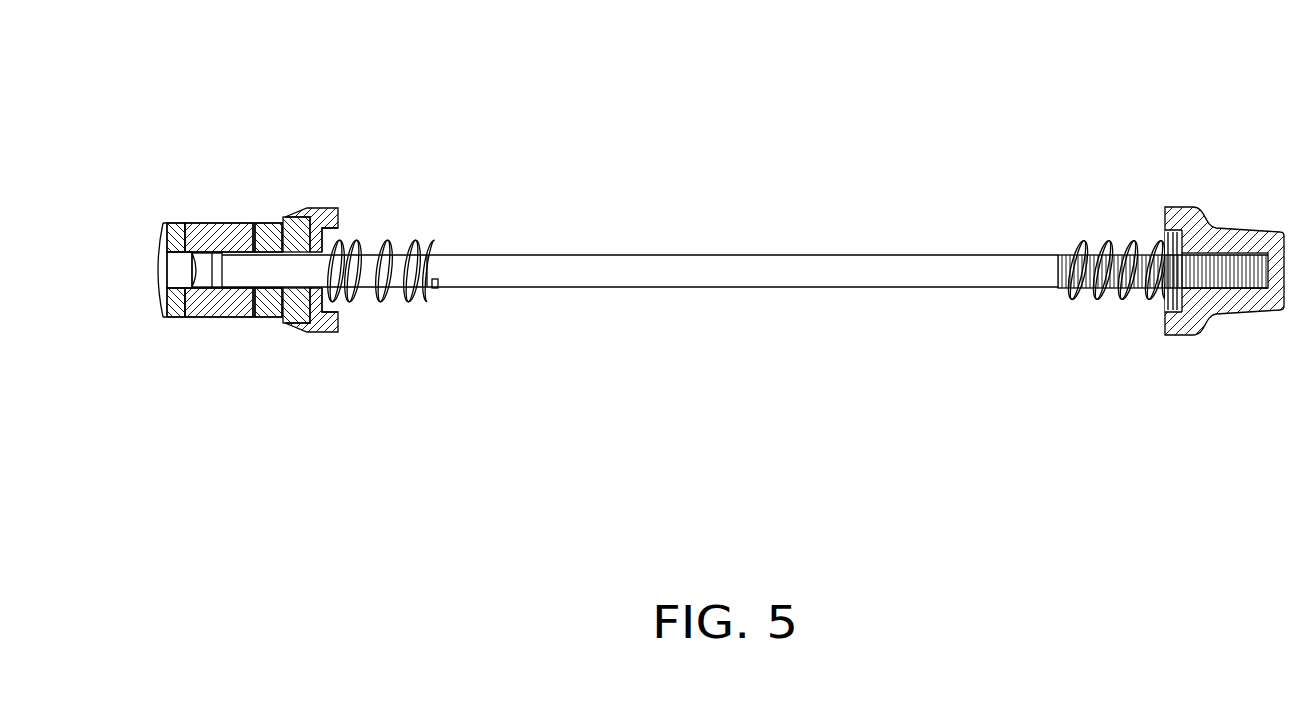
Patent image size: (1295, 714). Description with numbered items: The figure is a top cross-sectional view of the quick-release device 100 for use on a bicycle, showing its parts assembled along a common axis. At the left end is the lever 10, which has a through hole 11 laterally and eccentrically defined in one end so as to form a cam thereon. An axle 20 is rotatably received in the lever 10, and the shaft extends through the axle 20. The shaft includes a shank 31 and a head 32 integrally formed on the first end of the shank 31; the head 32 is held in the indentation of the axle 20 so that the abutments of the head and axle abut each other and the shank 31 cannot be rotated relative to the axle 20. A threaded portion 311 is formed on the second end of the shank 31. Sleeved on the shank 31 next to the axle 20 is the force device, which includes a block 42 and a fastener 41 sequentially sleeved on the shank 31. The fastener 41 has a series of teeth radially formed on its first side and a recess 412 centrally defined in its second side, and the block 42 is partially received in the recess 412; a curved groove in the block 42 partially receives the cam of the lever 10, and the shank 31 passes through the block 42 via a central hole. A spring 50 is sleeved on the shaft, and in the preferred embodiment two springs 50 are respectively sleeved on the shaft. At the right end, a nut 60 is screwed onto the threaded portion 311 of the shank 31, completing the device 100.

The quick-release device 100 is at (1008, 82).
The lever 10 is at (163, 300).
The through hole 11 is at (258, 303).
The axle 20 is at (205, 305).
The shank 31 is at (820, 272).
The threaded portion 311 is at (1240, 277).
The head 32 is at (203, 268).
The fastener 41 is at (337, 212).
The recess 412 is at (312, 230).
The block 42 is at (298, 310).
The spring 50 is at (1118, 288).
The nut 60 is at (1242, 240).